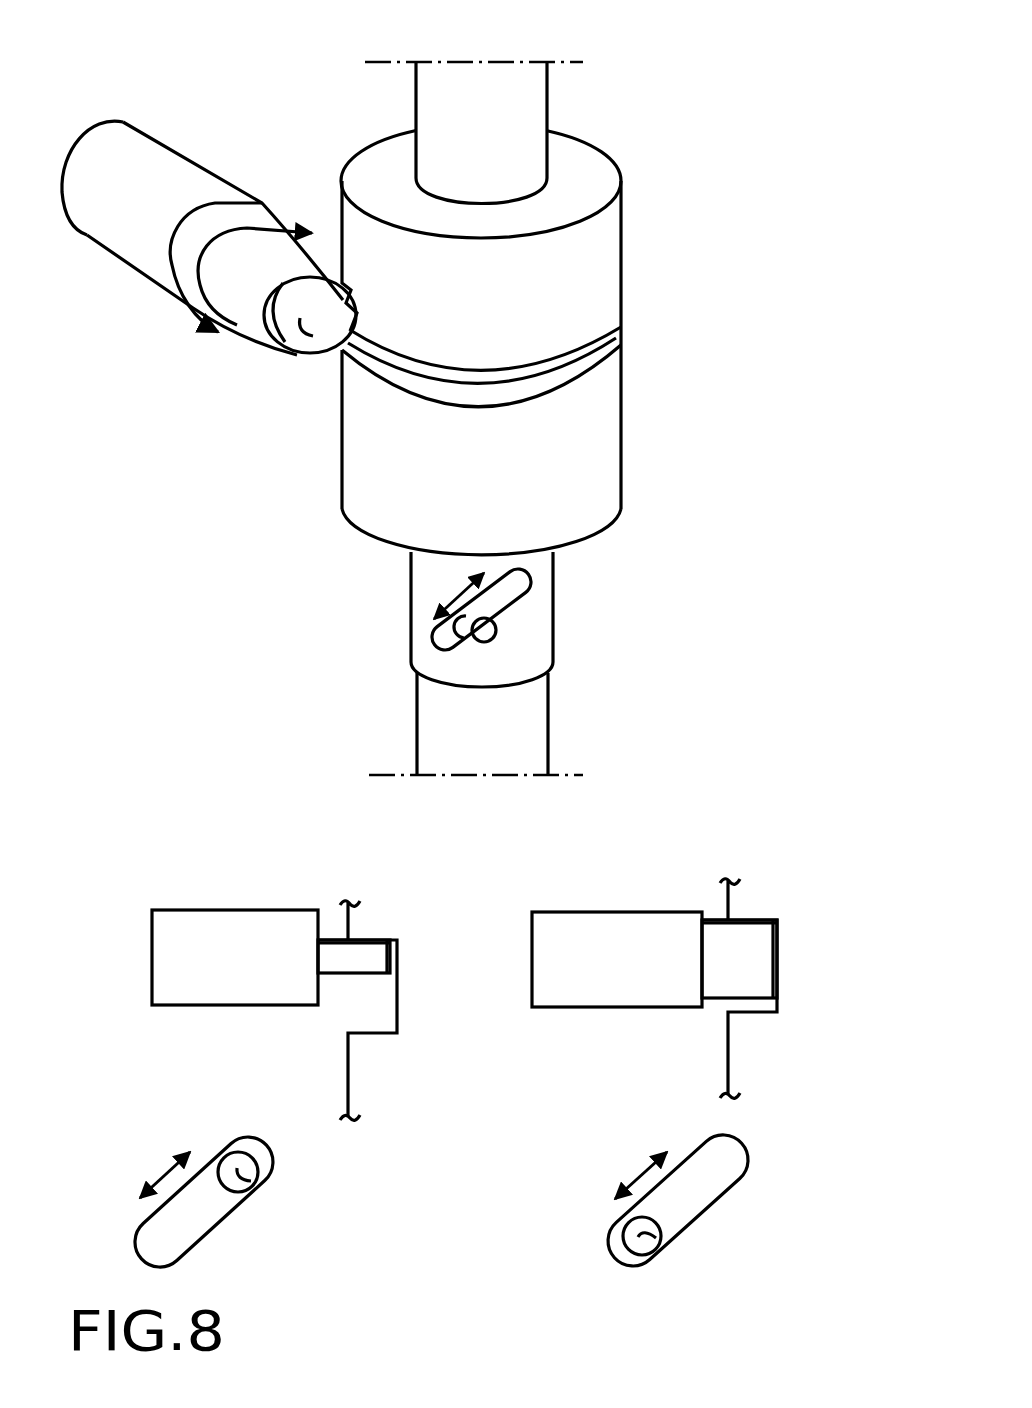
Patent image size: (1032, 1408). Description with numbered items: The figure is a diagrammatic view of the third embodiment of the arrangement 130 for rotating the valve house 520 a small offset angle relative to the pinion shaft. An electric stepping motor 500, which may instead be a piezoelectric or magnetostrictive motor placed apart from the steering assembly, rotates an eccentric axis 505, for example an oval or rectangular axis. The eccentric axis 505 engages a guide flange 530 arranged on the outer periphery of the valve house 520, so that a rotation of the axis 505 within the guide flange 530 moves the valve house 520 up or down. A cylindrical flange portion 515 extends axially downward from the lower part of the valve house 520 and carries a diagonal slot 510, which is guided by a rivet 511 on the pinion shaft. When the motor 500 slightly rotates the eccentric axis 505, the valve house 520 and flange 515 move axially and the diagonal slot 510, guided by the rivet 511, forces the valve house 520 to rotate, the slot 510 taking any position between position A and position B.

The stirring device / mixing assembly 130 is at (757, 95).
The electric stepping motor 500 is at (182, 170).
The eccentric axis 505 is at (305, 351).
The diagonal slot 510 is at (500, 594).
The rivet 511 is at (485, 634).
The cylindrical flange portion 515 is at (427, 580).
The valve house 520 is at (348, 1077).
The guide flange 530 is at (567, 268).